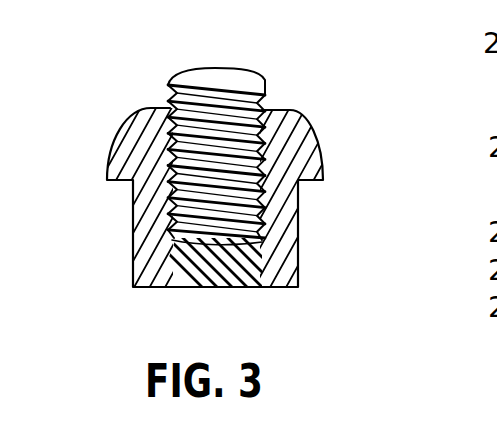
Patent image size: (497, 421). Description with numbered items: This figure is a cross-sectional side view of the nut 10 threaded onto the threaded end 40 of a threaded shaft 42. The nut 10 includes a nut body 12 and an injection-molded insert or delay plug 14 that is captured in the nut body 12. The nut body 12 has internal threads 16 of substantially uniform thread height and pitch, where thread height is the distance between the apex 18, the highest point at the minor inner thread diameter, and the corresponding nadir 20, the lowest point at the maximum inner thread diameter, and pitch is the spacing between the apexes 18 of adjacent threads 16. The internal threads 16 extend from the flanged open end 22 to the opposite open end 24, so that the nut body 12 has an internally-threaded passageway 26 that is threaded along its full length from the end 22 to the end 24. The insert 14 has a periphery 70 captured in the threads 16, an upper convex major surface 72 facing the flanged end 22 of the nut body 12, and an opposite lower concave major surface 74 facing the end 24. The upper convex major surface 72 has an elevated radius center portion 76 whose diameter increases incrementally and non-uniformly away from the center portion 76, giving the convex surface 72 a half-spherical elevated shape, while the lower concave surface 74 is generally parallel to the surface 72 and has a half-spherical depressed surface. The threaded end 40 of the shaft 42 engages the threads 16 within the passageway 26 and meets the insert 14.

The nut 10 is at (320, 110).
The nut body 12 is at (314, 226).
The insert or delay plug 14 is at (197, 297).
The internal threads 16 is at (135, 205).
The apex 18 is at (133, 247).
The nadir 20 is at (167, 220).
The flanged open end 22 is at (118, 133).
The opposite open end 24 is at (300, 288).
The internally-threaded passageway 26 is at (322, 199).
The threaded end 40 is at (268, 97).
The threaded shaft 42 is at (240, 60).
The periphery 70 is at (140, 290).
The upper convex major surface 72 is at (305, 248).
The lower concave major surface 74 is at (230, 282).
The elevated radius center portion 76 is at (230, 238).